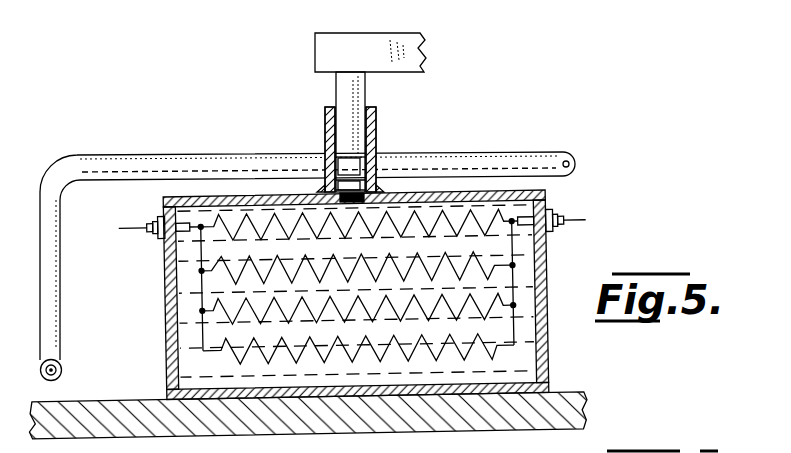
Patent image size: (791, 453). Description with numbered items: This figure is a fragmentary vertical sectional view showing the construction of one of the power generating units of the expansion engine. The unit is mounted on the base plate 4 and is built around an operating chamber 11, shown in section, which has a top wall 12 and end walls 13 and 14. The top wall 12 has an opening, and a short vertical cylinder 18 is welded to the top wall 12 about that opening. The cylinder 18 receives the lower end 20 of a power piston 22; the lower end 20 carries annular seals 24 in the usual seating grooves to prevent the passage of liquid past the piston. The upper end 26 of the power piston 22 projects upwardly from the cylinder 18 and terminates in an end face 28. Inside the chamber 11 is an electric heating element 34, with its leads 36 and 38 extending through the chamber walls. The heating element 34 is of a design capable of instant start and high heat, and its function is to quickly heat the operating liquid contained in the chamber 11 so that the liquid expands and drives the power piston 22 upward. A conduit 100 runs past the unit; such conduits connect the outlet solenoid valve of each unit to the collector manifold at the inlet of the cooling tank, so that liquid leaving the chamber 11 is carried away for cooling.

The base plate 4 is at (111, 406).
The operating chamber 11 is at (164, 320).
The top wall 12 is at (449, 191).
The end wall 13 is at (545, 268).
The end wall 14 is at (165, 262).
The short vertical cylinder 18 is at (376, 128).
The lower end of the power piston 20 is at (350, 170).
The power piston 22 is at (331, 88).
The annular seals 24 is at (368, 158).
The upper end of the piston 26 is at (352, 87).
The end face 28 is at (348, 71).
The electric heating element 34 is at (515, 320).
The lead 36 is at (585, 220).
The lead 38 is at (135, 227).
The conduit 100 is at (195, 153).